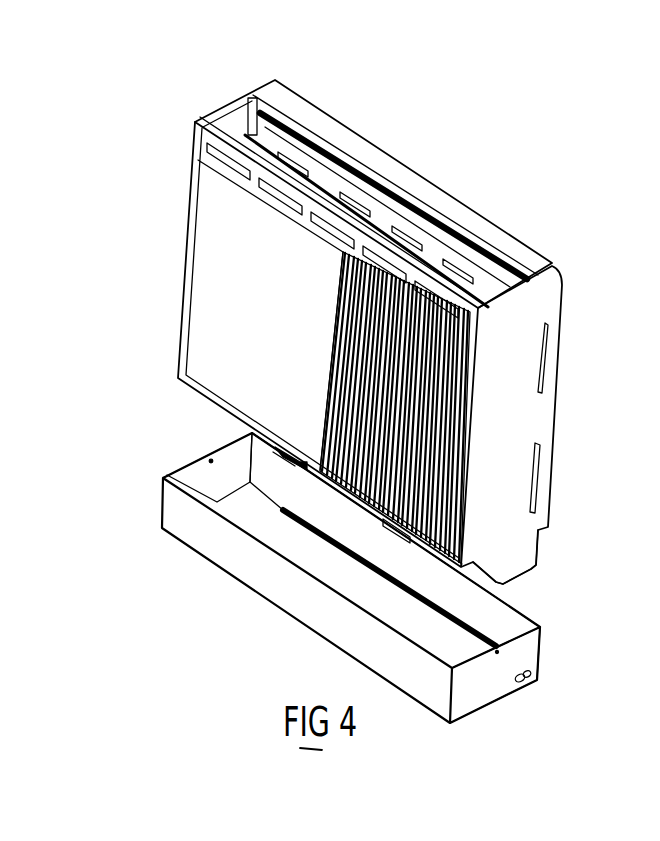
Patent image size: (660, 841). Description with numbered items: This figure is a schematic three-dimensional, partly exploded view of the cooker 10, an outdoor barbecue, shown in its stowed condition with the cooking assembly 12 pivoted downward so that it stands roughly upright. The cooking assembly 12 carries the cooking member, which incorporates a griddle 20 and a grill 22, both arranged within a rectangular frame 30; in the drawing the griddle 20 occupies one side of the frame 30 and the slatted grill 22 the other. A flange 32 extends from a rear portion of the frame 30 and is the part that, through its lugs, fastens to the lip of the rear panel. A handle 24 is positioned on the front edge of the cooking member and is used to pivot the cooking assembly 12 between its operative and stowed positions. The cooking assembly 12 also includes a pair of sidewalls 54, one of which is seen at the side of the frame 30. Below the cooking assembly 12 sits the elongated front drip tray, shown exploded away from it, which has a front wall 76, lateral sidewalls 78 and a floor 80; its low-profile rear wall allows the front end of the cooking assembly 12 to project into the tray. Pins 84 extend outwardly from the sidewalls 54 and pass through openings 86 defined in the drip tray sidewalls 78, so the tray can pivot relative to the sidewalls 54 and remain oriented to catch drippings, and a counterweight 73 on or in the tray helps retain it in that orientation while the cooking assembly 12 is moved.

The cooker 10 is at (535, 106).
The cooking assembly 12 is at (154, 327).
The griddle 20 is at (217, 246).
The grill 22 is at (478, 417).
The handle 24 is at (297, 457).
The rectangular frame 30 is at (190, 203).
The flange 32 is at (193, 129).
The sidewalls 54 is at (503, 482).
The counterweight 73 is at (477, 628).
The front wall 76 is at (180, 512).
The lateral sidewalls 78 is at (192, 462).
The floor 80 is at (268, 528).
The pins 84 is at (503, 550).
The openings 86 is at (498, 659).